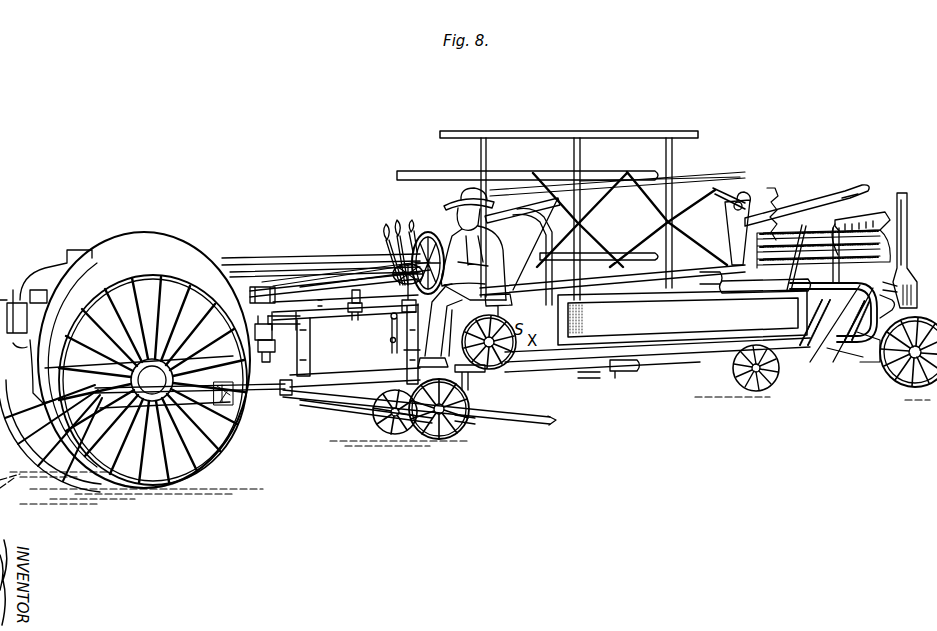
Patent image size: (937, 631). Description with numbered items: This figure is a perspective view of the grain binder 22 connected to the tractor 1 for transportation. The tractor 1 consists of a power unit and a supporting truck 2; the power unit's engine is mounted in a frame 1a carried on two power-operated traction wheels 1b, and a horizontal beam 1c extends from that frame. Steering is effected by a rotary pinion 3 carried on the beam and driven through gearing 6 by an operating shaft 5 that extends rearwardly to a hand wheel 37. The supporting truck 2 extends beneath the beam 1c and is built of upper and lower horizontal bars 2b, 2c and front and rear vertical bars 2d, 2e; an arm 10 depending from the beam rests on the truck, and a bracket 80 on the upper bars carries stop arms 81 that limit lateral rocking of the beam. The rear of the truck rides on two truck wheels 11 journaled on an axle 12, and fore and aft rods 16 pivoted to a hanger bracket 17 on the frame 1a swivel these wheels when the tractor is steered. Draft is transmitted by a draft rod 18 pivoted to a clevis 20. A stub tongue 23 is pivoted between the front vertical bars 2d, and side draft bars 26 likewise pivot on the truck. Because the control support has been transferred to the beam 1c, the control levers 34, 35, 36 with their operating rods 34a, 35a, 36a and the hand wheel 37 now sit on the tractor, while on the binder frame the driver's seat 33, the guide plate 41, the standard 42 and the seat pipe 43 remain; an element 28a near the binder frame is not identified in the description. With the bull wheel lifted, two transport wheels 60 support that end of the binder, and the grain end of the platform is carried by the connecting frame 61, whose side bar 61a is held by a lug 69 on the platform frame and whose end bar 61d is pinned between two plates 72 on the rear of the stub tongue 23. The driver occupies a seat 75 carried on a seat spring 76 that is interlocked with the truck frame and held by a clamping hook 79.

The tractor 1 is at (144, 352).
The frame 1a is at (70, 276).
The traction wheels 1b is at (212, 450).
The beam 1c is at (317, 298).
The supporting truck 2 is at (346, 341).
The upper horizontal bars 2b is at (328, 318).
The lower horizontal bars 2c is at (335, 405).
The front vertical bars 2d is at (308, 362).
The rear vertical bars 2e is at (414, 349).
The rotary pinion 3 is at (267, 338).
The operating shaft 5 is at (311, 267).
The gearing 6 is at (262, 292).
The arm 10 is at (280, 316).
The truck wheels 11 is at (387, 437).
The axle 12 is at (447, 443).
The fore and aft rods 16 is at (286, 396).
The hanger bracket 17 is at (200, 410).
The draft rod 18 is at (263, 392).
The clevis 20 is at (233, 400).
The grain binder 22 is at (821, 330).
The stub tongue 23 is at (366, 378).
The side draft bars 26 is at (507, 380).
The lifting lever 28a is at (800, 210).
The driver's seat 33 is at (873, 216).
The control lever 34 is at (386, 236).
The operating rod 34a is at (264, 276).
The control lever 35 is at (396, 226).
The operating rod 35a is at (283, 278).
The control lever 36 is at (415, 236).
The operating rod 36a is at (343, 278).
The hand wheel 37 is at (447, 228).
The guide plate 41 is at (899, 250).
The standard 42 is at (802, 240).
The seat pipe 43 is at (757, 290).
The transport wheels 60 is at (773, 372).
The connecting frame 61 is at (555, 378).
The side bar 61a is at (584, 378).
The end bar 61d is at (468, 370).
The lug 69 is at (618, 372).
The plates 72 is at (463, 425).
The seat 75 is at (510, 310).
The seat spring 76 is at (391, 319).
The clamping hook 79 is at (393, 348).
The bracket 80 is at (360, 310).
The stop arms 81 is at (353, 305).